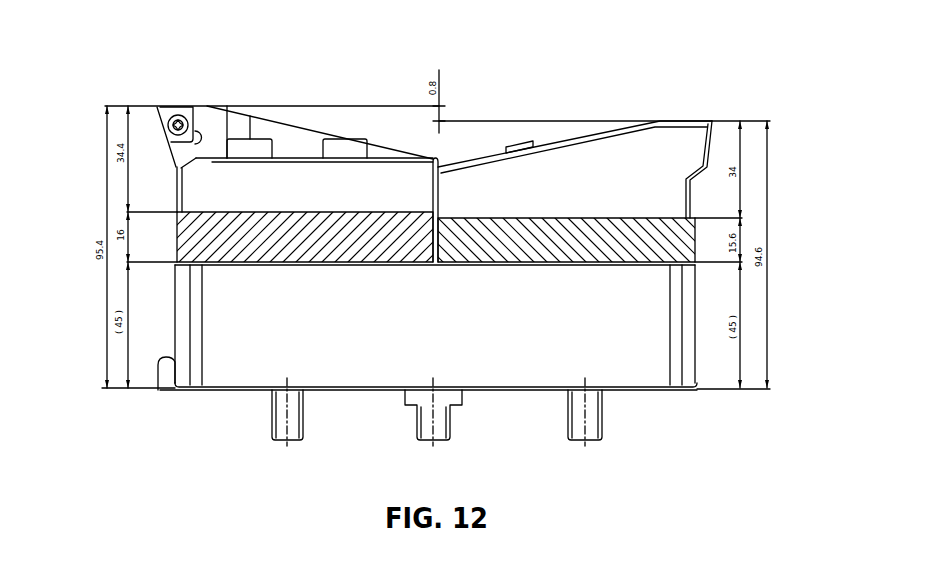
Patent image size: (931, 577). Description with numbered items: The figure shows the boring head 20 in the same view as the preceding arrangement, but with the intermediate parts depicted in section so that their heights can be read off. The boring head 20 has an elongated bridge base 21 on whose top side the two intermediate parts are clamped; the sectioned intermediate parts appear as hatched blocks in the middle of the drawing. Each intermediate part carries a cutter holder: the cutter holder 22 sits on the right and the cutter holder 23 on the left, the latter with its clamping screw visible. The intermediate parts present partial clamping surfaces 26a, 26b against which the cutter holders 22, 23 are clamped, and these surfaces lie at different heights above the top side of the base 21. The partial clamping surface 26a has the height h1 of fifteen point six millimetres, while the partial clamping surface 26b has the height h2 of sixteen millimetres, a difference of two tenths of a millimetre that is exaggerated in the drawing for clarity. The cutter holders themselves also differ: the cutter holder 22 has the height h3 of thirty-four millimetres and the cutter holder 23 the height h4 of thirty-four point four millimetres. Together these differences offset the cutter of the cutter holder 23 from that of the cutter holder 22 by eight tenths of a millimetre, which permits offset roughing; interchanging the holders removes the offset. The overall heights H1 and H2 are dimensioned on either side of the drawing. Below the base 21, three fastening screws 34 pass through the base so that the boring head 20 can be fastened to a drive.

The boring head 20 is at (525, 135).
The bridge base 21 is at (158, 390).
The cutter holder 22 is at (603, 133).
The cutter holder 23 is at (280, 125).
The partial clamping surface 26a is at (633, 208).
The partial clamping surface 26b is at (230, 199).
The fastening screws 34 is at (270, 427).
The height of partial clamping surface 26a h1 is at (742, 243).
The height of partial clamping surface 26b h2 is at (127, 245).
The height of cutter holder 22 h3 is at (742, 205).
The height of cutter holder 23 h4 is at (128, 133).
The overall height H1 is at (768, 318).
The overall height H2 is at (107, 340).